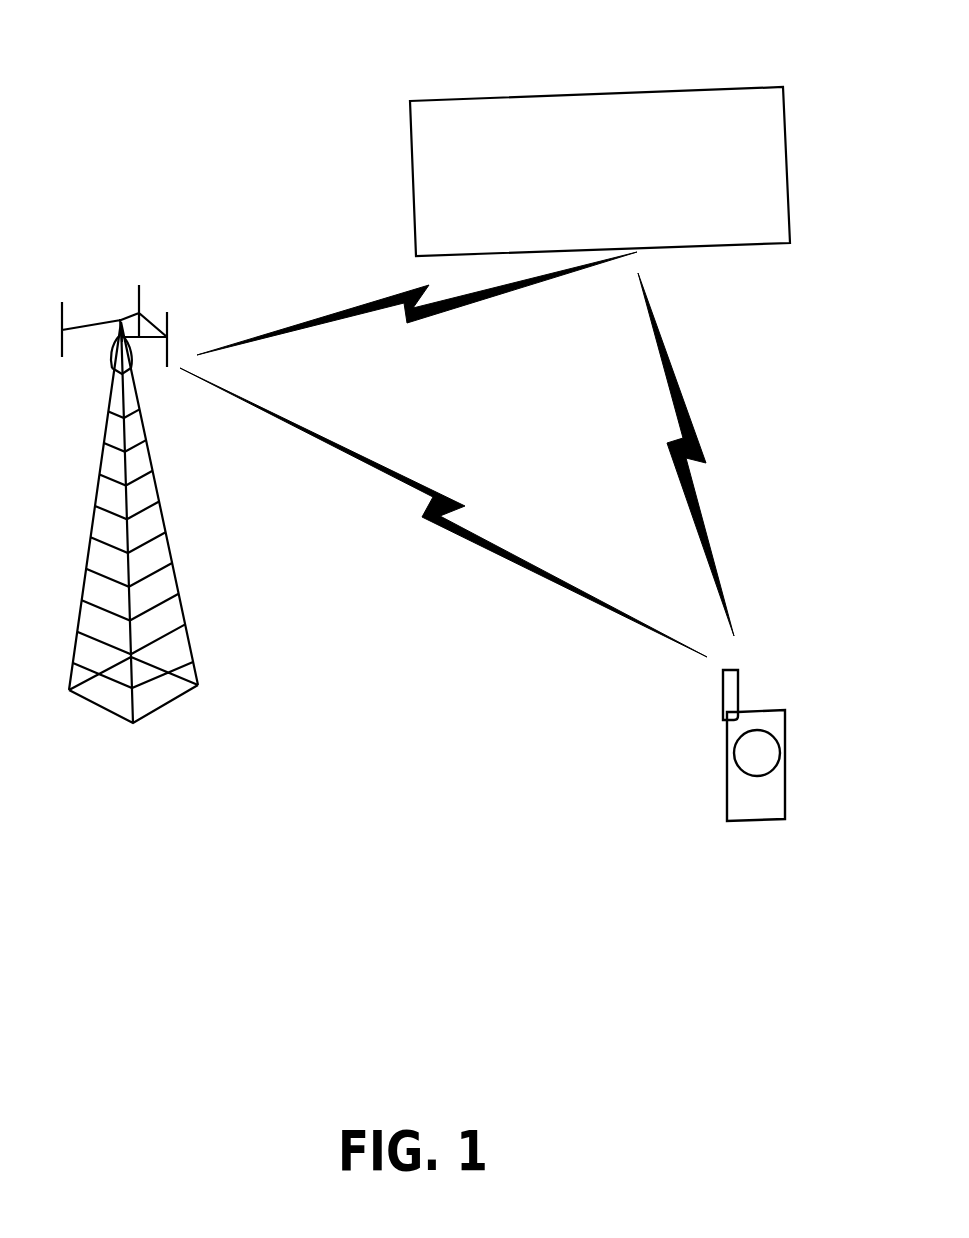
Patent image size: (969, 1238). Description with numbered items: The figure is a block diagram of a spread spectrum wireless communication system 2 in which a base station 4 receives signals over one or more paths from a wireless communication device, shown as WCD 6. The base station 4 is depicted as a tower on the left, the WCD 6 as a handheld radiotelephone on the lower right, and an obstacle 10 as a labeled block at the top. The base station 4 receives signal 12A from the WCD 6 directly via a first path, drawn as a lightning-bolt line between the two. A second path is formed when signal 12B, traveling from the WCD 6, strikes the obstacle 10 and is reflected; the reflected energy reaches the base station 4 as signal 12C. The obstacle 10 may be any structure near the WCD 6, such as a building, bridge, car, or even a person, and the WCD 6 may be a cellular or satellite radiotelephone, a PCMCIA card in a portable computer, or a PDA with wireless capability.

The spread spectrum wireless communication system 2 is at (398, 74).
The base station 4 is at (205, 663).
The WCD 6 is at (785, 699).
The obstacle 10 is at (615, 202).
The signal 12A is at (337, 445).
The signal 12B is at (658, 328).
The signal 12C is at (352, 306).